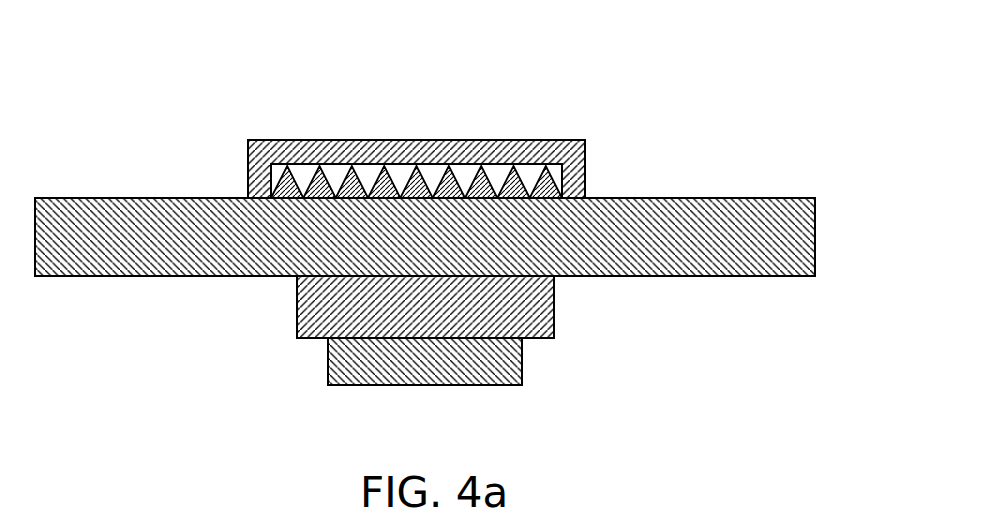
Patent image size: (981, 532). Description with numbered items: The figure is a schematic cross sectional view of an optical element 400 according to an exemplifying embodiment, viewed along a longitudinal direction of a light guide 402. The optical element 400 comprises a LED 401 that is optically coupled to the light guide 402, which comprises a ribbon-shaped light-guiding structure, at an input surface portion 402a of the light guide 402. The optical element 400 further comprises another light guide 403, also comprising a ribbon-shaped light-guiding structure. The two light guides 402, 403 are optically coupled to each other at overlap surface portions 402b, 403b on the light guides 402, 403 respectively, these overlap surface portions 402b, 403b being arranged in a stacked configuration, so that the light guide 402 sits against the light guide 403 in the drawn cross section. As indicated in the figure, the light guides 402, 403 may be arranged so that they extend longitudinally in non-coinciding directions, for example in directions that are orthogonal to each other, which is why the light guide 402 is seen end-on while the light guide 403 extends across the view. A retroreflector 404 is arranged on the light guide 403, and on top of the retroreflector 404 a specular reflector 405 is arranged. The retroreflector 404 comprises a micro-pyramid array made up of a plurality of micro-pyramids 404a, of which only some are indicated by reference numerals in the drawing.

The optical element 400 is at (668, 68).
The LED 401 is at (522, 367).
The light guide 402 is at (554, 293).
The input surface portion 402a is at (482, 333).
The overlap surface portion 402b is at (368, 280).
The light guide 403 is at (780, 198).
The overlap surface portion 403b is at (338, 272).
The retroreflector 404 is at (368, 180).
The micro-pyramids 404a is at (298, 175).
The specular reflector 405 is at (525, 139).